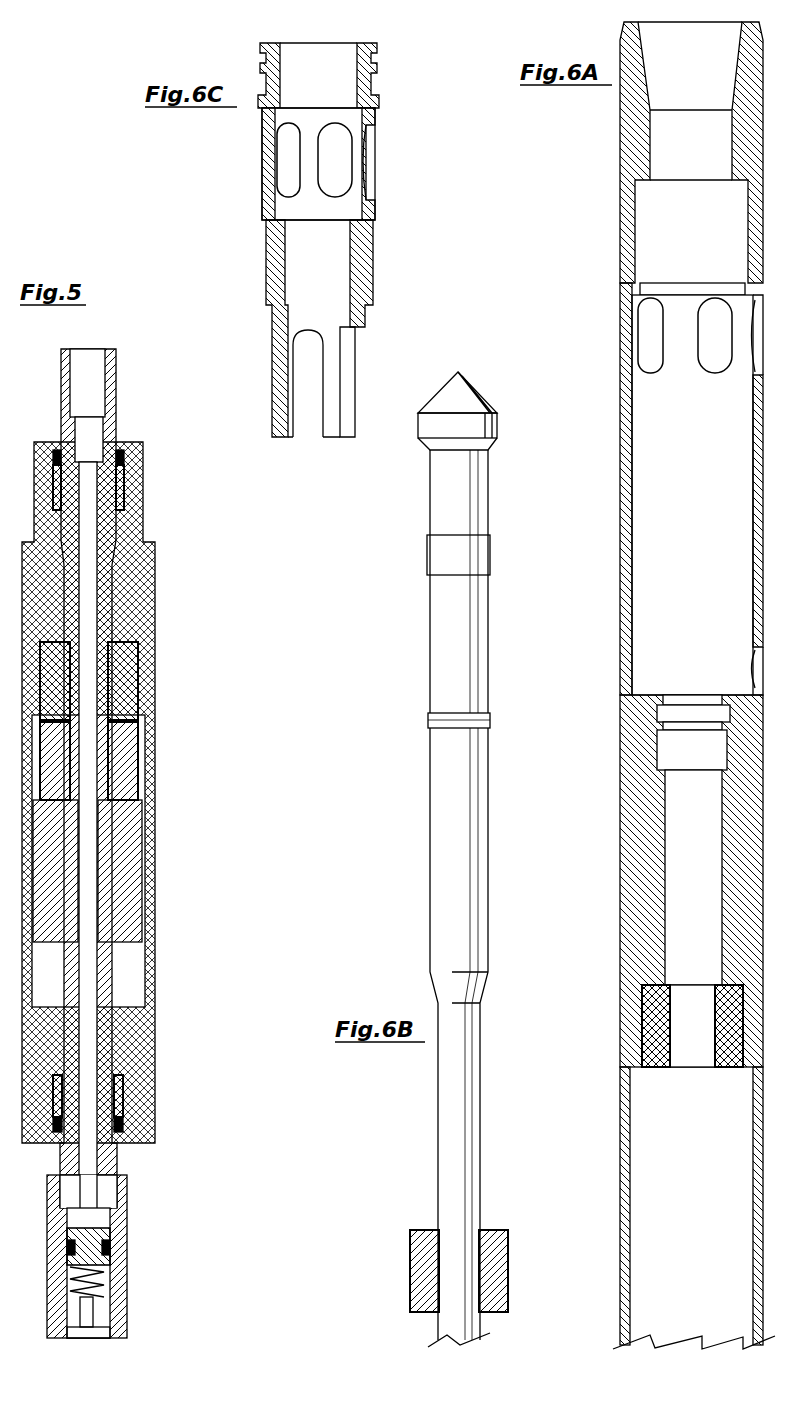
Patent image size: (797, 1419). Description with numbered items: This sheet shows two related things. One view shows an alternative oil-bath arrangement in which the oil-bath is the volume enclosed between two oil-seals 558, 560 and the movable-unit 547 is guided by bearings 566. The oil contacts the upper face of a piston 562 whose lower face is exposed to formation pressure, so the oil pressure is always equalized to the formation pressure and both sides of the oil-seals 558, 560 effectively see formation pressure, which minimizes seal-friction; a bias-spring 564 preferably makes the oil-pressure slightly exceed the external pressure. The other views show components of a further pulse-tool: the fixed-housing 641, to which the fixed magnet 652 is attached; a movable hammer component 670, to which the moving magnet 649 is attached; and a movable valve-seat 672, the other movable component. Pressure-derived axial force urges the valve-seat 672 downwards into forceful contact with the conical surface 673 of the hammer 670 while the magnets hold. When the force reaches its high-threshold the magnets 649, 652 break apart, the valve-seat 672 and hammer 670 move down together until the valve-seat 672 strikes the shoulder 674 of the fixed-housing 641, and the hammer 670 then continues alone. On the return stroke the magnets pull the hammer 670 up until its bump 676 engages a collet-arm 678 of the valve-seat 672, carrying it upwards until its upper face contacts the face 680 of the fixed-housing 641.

In FIG. 5, the movable-unit 547 is at (120, 873).
In FIG. 5, the oil-seal 558 is at (125, 455).
In FIG. 5, the oil-seal 560 is at (120, 1128).
In FIG. 5, the piston 562 is at (100, 1233).
In FIG. 5, the bias-spring 564 is at (93, 1287).
In FIG. 5, the bearings 566 is at (120, 1092).
In FIG. 6A, the fixed-housing 641 is at (642, 787).
In FIG. 6B, the moving magnet 649 is at (425, 1255).
In FIG. 6A, the fixed magnet 652 is at (655, 1012).
In FIG. 6B, the movable hammer component 670 is at (438, 835).
In FIG. 6C, the movable valve-seat 672 is at (372, 247).
In FIG. 6B, the conical surface 673 is at (467, 400).
In FIG. 6A, the shoulder 674 is at (643, 263).
In FIG. 6B, the bump 676 is at (443, 723).
In FIG. 6C, the collet-arm 678 is at (331, 425).
In FIG. 6A, the face 680 is at (643, 193).